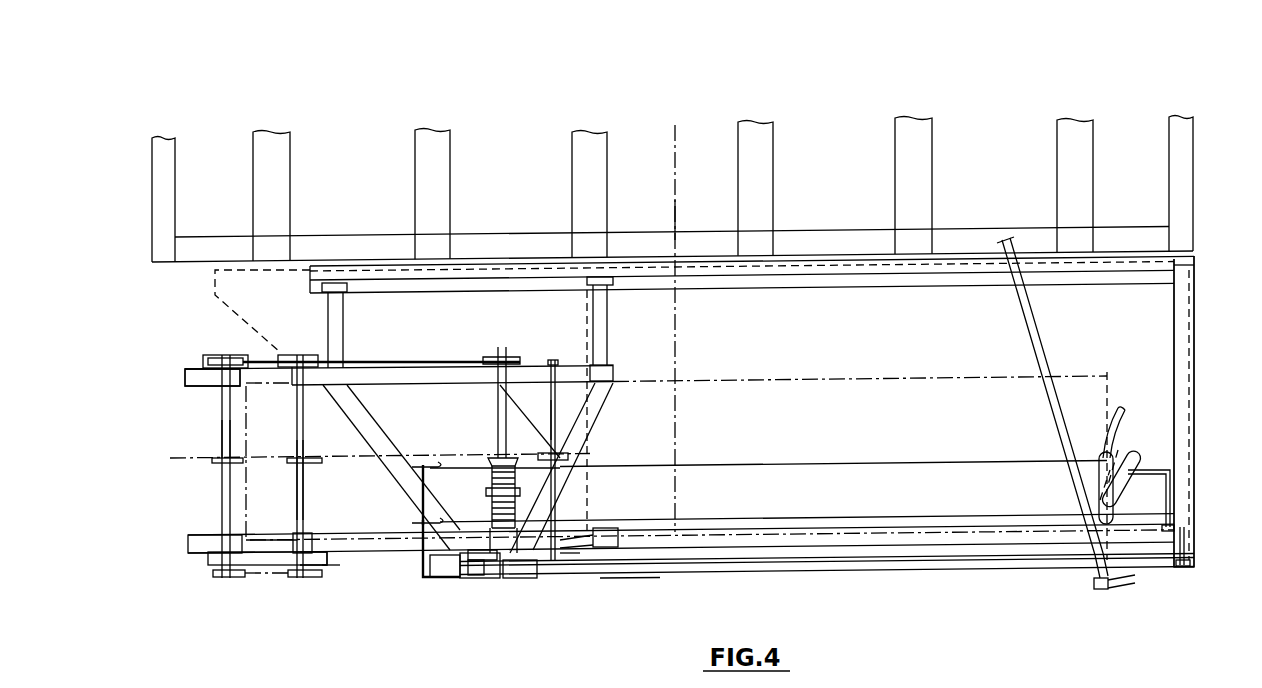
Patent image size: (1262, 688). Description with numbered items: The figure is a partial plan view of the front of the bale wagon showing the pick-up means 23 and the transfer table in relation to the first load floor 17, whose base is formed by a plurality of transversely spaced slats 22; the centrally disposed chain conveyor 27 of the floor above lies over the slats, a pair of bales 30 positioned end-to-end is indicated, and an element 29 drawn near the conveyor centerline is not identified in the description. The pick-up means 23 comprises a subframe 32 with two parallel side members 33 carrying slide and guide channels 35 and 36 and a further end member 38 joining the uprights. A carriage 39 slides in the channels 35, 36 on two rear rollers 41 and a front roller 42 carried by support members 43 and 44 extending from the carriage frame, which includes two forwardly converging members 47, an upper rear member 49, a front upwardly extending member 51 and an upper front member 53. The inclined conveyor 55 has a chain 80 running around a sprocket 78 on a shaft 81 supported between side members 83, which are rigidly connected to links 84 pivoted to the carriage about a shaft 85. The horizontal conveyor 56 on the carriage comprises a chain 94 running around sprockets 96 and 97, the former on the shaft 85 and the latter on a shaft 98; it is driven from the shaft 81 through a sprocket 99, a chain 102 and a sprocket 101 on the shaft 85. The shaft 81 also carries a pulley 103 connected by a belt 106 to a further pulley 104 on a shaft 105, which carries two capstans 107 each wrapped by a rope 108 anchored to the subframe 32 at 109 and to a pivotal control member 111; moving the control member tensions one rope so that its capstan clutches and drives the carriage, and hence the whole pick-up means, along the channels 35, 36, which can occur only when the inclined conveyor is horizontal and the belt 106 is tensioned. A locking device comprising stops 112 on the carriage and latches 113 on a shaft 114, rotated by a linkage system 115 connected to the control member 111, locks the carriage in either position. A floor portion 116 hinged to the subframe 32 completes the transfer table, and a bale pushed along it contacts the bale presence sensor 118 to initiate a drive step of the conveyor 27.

The first load floor 17 is at (1197, 221).
The slats 22 is at (291, 205).
The pick-up means 23 is at (350, 572).
The chain conveyor 27 is at (678, 209).
The plane 29 is at (677, 223).
The bales 30 is at (654, 431).
The subframe 32 is at (638, 585).
The side members 33 is at (748, 566).
The slide and guide channel 35 is at (432, 300).
The slide and guide channel 36 is at (737, 548).
The further end member 38 is at (1196, 442).
The carriage 39 is at (586, 450).
The rear rollers 41 is at (348, 290).
The front roller 42 is at (496, 578).
The support members 43 is at (478, 578).
The support member 44 is at (343, 340).
The forwardly converging members 47 is at (409, 490).
The upper rear member 49 is at (550, 364).
The front upwardly extending member 51 is at (518, 578).
The upper front member 53 is at (450, 578).
The inclined conveyor 55 is at (197, 566).
The horizontal conveyor 56 is at (418, 567).
The sprocket 78 is at (242, 466).
The chain 80 is at (180, 462).
The shaft 81 is at (246, 500).
The side members 83 is at (197, 366).
The links 84 is at (292, 354).
The shaft 85 is at (305, 478).
The chain 94 is at (420, 465).
The sprocket 96 is at (314, 456).
The sprocket 97 is at (548, 452).
The shaft 98 is at (552, 420).
The sprocket 99 is at (236, 572).
The sprocket 101 is at (354, 574).
The chain 102 is at (310, 575).
The pulley 103 is at (215, 354).
The further pulley 104 is at (502, 350).
The shaft 105 is at (488, 445).
The belt 106 is at (418, 364).
The capstans 107 is at (488, 465).
The rope 108 is at (857, 467).
The attachment point 109 is at (437, 518).
The pivotal control member 111 is at (1118, 458).
The stops 112 is at (605, 540).
The latches 113 is at (620, 560).
The shaft 114 is at (910, 570).
The linkage system 115 is at (1185, 548).
The floor portion 116 is at (822, 574).
The bale presence sensor 118 is at (1130, 408).